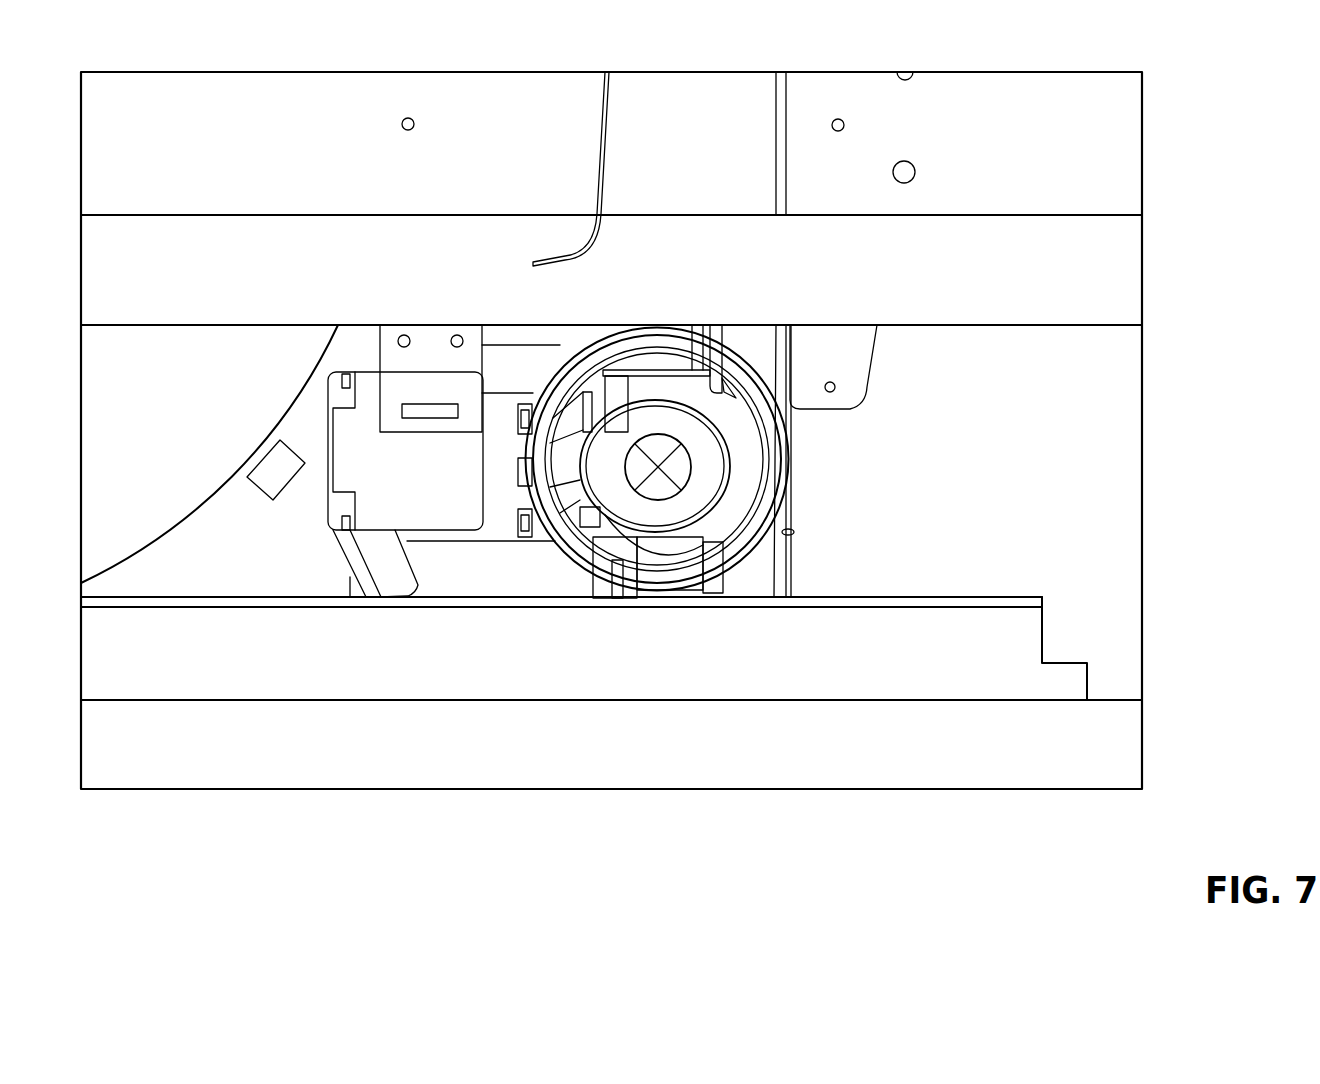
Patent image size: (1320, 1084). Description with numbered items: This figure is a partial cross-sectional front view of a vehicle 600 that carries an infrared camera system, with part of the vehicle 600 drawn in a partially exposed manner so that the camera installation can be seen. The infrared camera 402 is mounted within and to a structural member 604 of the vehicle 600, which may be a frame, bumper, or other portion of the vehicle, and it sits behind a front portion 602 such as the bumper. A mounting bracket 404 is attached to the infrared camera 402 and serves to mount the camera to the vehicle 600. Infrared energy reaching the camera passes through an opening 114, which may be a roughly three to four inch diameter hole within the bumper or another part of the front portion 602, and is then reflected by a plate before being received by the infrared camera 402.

The vehicle 600 is at (819, 859).
The front portion 602 is at (541, 143).
The structural member 604 is at (285, 372).
The infrared camera 402 is at (427, 498).
The mounting bracket 404 is at (451, 385).
The opening 114 is at (811, 465).